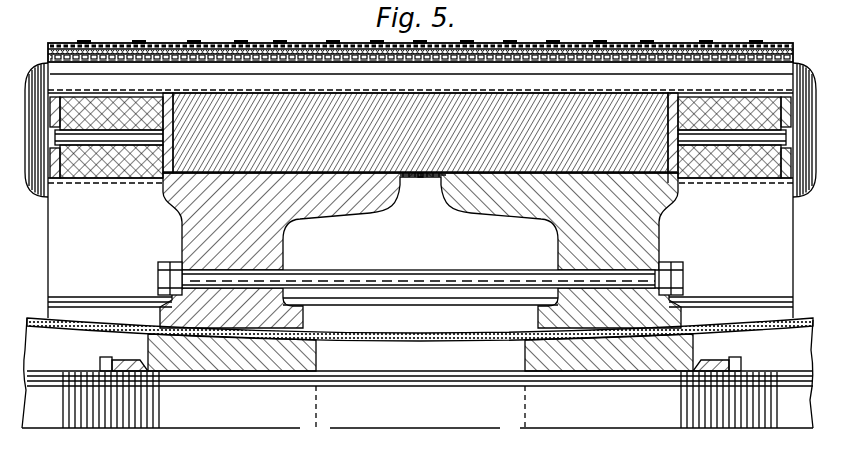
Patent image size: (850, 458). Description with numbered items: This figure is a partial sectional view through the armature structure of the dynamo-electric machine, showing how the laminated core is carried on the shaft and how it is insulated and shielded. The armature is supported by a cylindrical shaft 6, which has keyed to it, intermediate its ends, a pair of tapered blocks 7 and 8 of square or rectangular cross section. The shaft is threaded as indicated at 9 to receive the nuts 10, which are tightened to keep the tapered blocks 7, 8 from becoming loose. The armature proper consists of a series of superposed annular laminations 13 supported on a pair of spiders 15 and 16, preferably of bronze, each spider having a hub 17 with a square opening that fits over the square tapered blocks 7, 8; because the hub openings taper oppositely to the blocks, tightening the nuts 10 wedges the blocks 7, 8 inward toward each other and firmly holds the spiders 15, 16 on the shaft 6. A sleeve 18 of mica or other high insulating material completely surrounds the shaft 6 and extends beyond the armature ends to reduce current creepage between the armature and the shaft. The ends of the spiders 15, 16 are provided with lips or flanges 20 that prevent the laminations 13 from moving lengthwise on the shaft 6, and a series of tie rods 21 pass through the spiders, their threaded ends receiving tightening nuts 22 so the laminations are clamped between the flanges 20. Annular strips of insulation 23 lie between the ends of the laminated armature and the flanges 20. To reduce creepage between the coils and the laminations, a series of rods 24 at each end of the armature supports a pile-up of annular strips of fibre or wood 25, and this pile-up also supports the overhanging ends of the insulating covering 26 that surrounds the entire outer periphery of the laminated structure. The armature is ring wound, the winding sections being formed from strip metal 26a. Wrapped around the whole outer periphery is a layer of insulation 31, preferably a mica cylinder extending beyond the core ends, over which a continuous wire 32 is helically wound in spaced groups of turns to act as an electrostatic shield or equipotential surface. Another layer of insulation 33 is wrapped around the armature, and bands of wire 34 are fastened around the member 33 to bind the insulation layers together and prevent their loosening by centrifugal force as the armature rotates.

The cylindrical shaft 6 is at (210, 418).
The tapered block 7 is at (316, 356).
The tapered block 8 is at (523, 352).
The threaded portion of shaft 9 is at (97, 418).
The nut 10 is at (123, 357).
The annular lamination 13 is at (420, 133).
The spider 15 is at (283, 246).
The spider 16 is at (555, 242).
The hub 17 is at (306, 318).
The insulating sleeve 18 is at (396, 336).
The flange 20 is at (678, 185).
The tie rod 21 is at (404, 276).
The tightening nut 22 is at (665, 262).
The annular insulation strip 23 is at (148, 175).
The rod 24 is at (748, 140).
The annular fibre or wood strip 25 is at (80, 185).
The insulating covering 26 is at (724, 93).
The strip metal 26a is at (33, 197).
The insulation layer 31 is at (166, 47).
The wire shield 32 is at (216, 44).
The insulation layer 33 is at (268, 44).
The wire band 34 is at (562, 43).